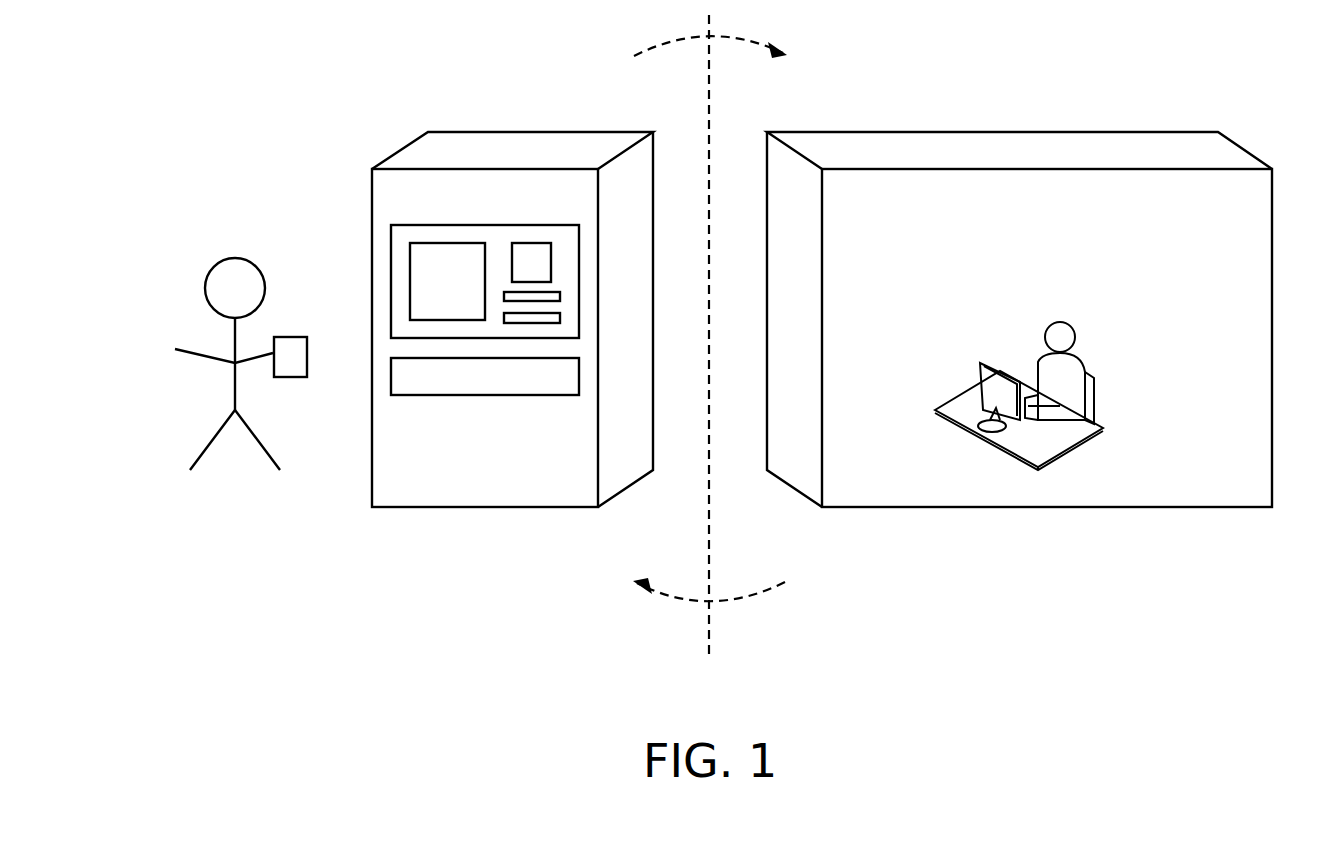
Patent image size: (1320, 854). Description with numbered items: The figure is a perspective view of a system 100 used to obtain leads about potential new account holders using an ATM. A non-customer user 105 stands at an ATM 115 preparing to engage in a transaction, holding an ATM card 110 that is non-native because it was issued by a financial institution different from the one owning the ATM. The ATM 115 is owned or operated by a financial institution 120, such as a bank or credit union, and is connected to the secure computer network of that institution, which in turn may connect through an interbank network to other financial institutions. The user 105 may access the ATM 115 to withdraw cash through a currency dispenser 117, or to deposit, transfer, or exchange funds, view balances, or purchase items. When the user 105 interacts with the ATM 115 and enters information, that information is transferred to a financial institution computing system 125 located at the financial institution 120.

The system environment 100 is at (176, 96).
The non-customer user 105 is at (232, 272).
The ATM card 110 is at (304, 347).
The ATM 115 is at (543, 142).
The currency dispenser 117 is at (560, 295).
The financial institution 120 is at (1047, 142).
The financial institution computing system 125 is at (996, 380).